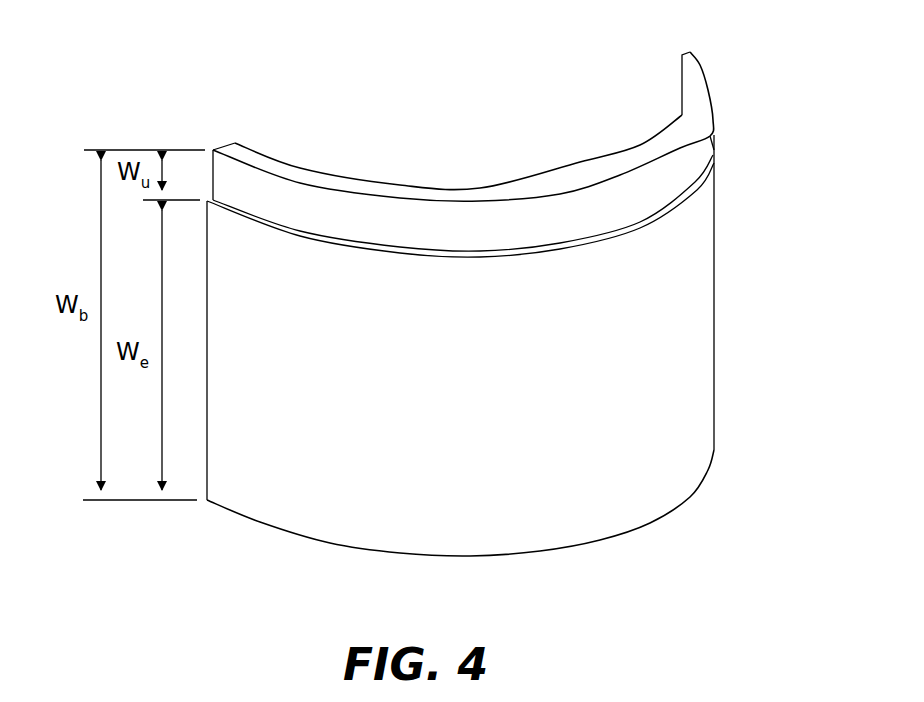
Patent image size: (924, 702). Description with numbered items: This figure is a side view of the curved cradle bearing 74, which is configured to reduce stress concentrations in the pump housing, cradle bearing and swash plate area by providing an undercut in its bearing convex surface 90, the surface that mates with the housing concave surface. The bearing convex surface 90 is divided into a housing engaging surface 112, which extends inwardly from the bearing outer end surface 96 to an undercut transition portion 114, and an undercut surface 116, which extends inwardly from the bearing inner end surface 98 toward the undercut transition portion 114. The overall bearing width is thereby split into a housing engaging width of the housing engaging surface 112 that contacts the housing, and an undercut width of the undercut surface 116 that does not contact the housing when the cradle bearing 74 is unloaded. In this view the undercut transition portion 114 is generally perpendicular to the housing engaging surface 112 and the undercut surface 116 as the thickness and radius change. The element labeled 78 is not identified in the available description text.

The cradle bearing 74 is at (103, 102).
The upper band 78 is at (425, 187).
The bearing convex surface 90 is at (482, 393).
The bearing outer end surface 96 is at (558, 545).
The bearing inner end surface 98 is at (522, 190).
The housing engaging surface 112 is at (678, 368).
The undercut transition portion 114 is at (712, 133).
The undercut surface 116 is at (319, 222).